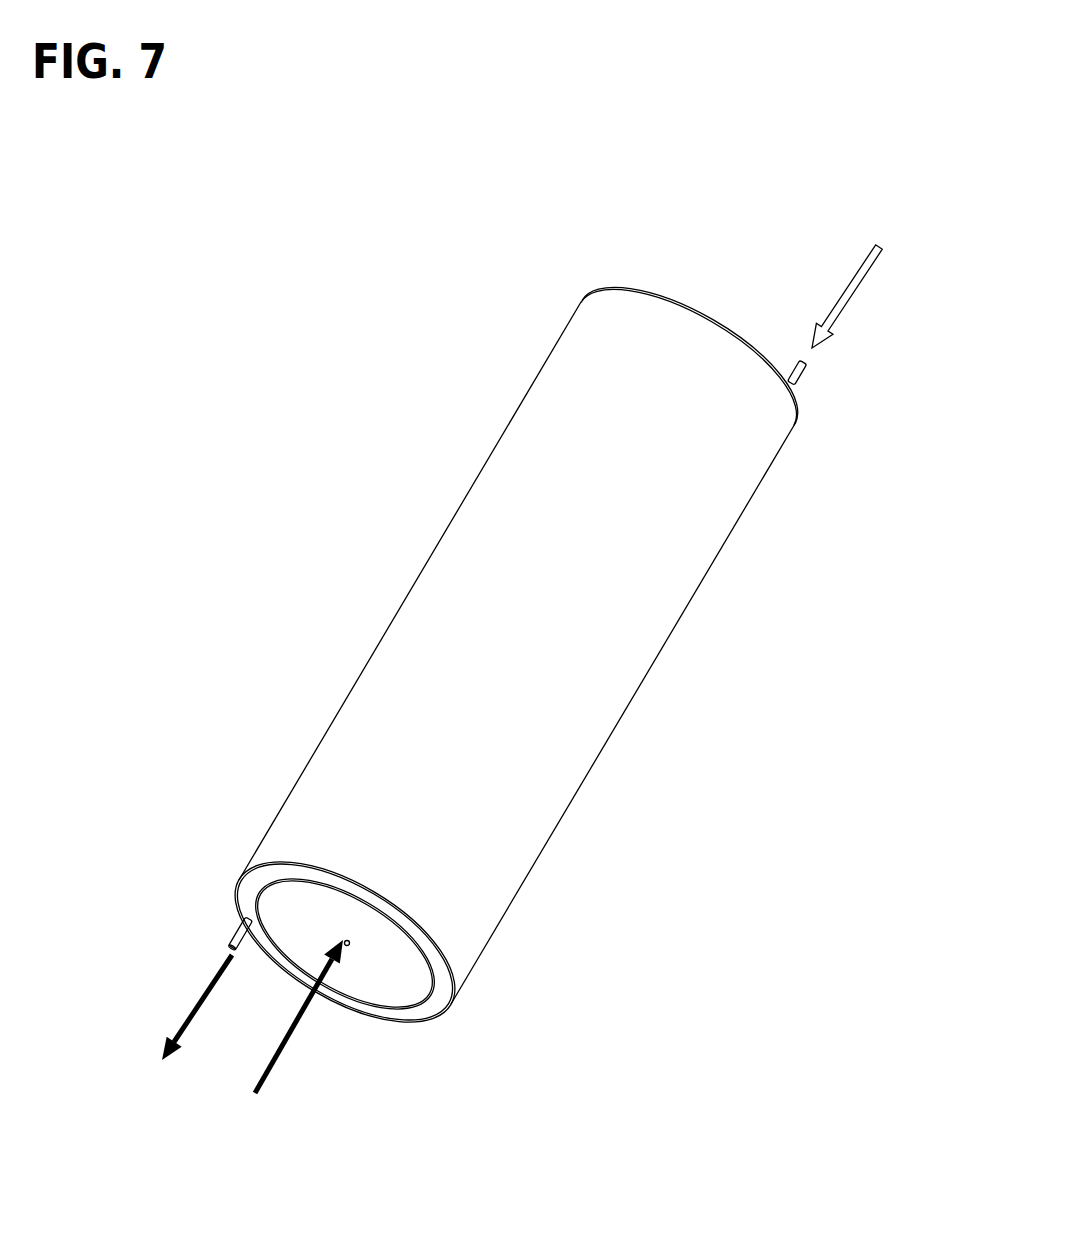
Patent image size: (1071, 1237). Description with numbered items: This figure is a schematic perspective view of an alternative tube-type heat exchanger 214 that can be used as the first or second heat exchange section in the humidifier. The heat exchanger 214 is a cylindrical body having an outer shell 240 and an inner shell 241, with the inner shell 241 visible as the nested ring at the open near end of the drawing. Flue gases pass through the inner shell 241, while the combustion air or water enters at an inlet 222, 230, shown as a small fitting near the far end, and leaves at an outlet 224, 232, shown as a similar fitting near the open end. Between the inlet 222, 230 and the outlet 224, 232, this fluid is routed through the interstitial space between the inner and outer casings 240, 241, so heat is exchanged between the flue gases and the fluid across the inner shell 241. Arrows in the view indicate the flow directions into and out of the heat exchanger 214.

The tube-type heat exchanger 214 is at (168, 295).
The inlet 222 is at (797, 380).
The inlet 230 is at (868, 393).
The outlet 224 is at (240, 933).
The outlet 232 is at (190, 921).
The outer shell 240 is at (502, 888).
The inner shell 241 is at (367, 967).